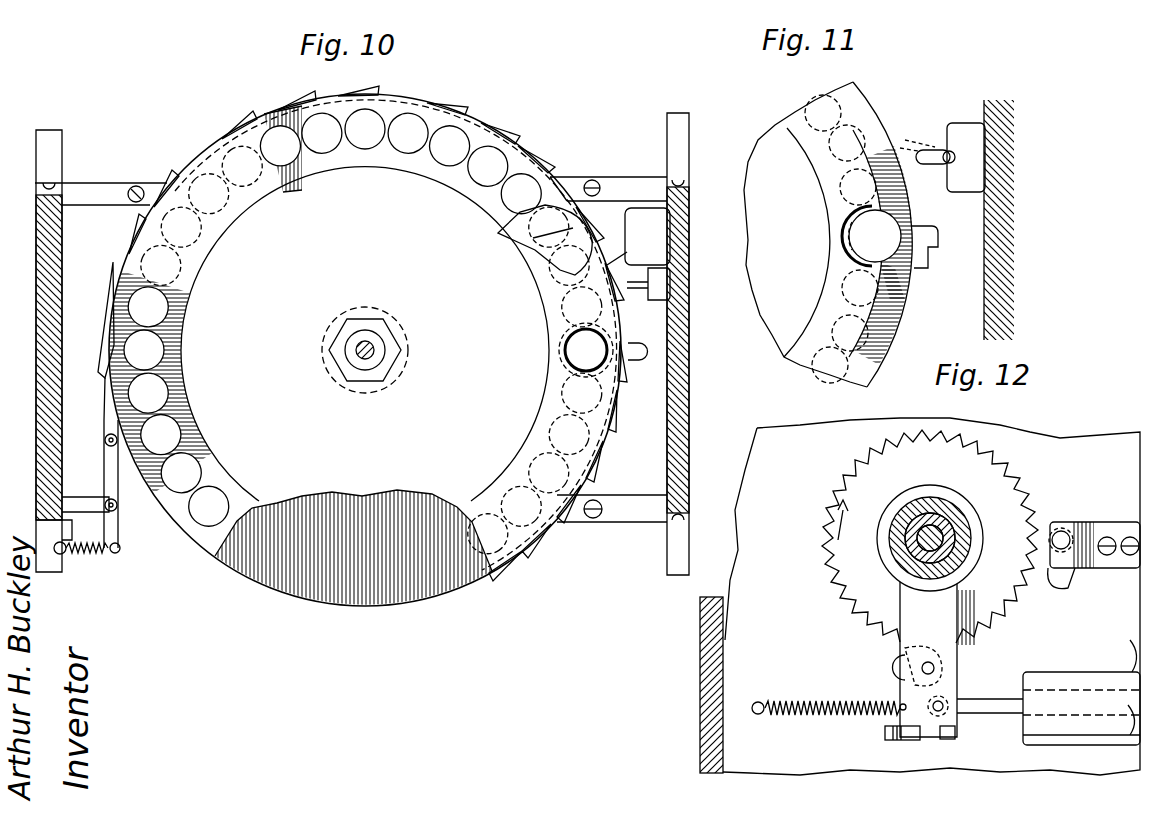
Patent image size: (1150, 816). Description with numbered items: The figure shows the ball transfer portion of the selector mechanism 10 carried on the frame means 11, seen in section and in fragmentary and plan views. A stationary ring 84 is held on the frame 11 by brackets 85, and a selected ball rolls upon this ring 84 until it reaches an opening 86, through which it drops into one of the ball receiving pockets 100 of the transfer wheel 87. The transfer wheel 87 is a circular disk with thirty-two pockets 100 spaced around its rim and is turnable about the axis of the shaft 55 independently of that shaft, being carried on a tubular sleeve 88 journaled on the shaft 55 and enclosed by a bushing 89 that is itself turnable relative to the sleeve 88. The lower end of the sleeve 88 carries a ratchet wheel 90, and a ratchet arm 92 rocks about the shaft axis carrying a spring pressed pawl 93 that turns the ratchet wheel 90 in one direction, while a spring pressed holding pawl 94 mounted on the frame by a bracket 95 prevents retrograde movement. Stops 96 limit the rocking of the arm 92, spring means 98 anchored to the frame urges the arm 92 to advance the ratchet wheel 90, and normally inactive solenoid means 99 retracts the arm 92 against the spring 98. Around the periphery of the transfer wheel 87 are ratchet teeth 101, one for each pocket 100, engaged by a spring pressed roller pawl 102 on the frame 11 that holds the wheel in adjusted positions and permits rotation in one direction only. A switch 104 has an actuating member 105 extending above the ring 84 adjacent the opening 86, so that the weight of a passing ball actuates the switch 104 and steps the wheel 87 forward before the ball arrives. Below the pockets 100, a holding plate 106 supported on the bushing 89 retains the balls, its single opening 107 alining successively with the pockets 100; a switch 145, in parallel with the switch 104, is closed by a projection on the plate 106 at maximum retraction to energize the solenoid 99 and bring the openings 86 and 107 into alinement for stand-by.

In FIG. 10, the selector mechanism 10 is at (197, 141).
In FIG. 10, the frame means 11 is at (40, 232).
In FIG. 11, the frame means 11 is at (1003, 223).
In FIG. 12, the frame means 11 is at (1083, 437).
In FIG. 10, the shaft 55 is at (374, 347).
In FIG. 12, the shaft 55 is at (950, 520).
In FIG. 10, the ring 84 is at (542, 407).
In FIG. 11, the ring 84 is at (857, 92).
In FIG. 10, the brackets 85 is at (118, 183).
In FIG. 10, the opening 86 is at (565, 359).
In FIG. 11, the opening 86 is at (848, 246).
In FIG. 10, the transfer wheel 87 is at (441, 113).
In FIG. 11, the transfer wheel 87 is at (877, 127).
In FIG. 12, the tubular sleeve 88 is at (912, 515).
In FIG. 12, the bushing 89 is at (937, 505).
In FIG. 12, the ratchet wheel 90 is at (996, 616).
In FIG. 12, the ratchet arm 92 is at (910, 603).
In FIG. 12, the spring pressed pawl 93 is at (904, 665).
In FIG. 12, the spring pressed holding pawl 94 is at (1059, 589).
In FIG. 12, the bracket 95 is at (1062, 522).
In FIG. 12, the stops 96 is at (890, 740).
In FIG. 12, the spring means 98 is at (862, 715).
In FIG. 12, the solenoid means 99 is at (1098, 675).
In FIG. 10, the ball receiving pockets 100 is at (463, 143).
In FIG. 11, the ball receiving pockets 100 is at (838, 158).
In FIG. 10, the ratchet teeth 101 is at (264, 117).
In FIG. 10, the spring pressed roller pawl 102 is at (104, 473).
In FIG. 10, the switch 104 is at (638, 236).
In FIG. 10, the actuating member 105 is at (538, 258).
In FIG. 10, the holding plate 106 is at (334, 600).
In FIG. 11, the holding plate 106 is at (906, 278).
In FIG. 10, the opening 107 is at (563, 351).
In FIG. 11, the opening 107 is at (842, 238).
In FIG. 10, the switch 145 is at (652, 288).
In FIG. 11, the switch 145 is at (966, 165).